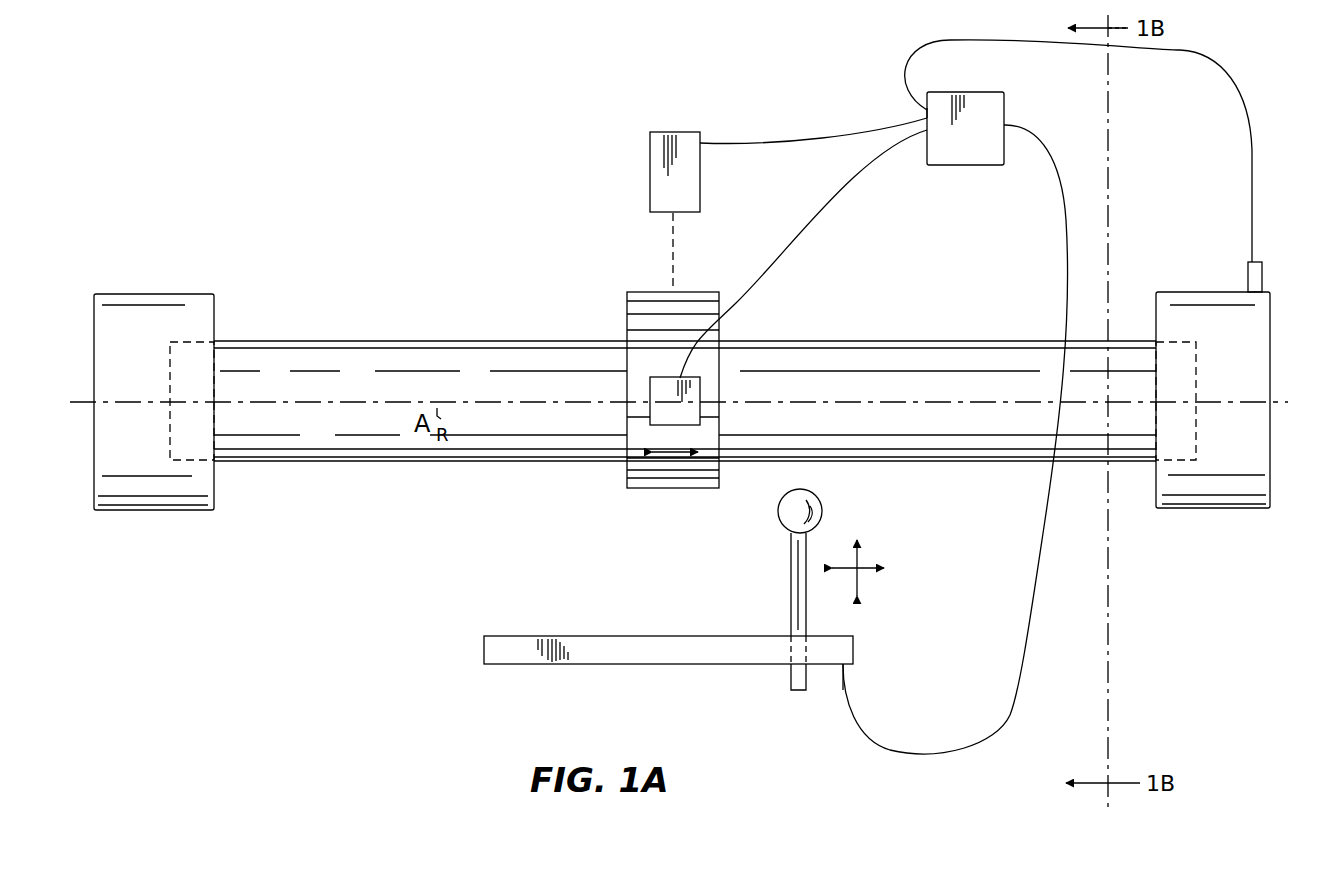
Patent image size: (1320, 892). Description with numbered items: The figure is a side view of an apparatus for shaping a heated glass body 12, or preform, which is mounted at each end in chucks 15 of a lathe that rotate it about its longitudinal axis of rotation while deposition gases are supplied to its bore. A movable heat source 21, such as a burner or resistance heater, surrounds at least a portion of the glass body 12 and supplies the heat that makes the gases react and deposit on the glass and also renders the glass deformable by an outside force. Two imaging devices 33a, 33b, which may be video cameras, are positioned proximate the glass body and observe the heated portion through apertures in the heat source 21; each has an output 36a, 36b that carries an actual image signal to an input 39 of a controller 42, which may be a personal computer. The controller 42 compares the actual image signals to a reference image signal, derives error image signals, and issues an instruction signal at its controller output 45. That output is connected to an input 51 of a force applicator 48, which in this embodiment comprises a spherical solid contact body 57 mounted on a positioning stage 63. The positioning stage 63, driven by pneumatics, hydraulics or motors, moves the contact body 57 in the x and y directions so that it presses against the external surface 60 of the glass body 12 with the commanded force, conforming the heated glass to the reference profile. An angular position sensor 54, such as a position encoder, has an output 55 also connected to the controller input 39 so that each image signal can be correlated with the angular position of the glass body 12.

The glass body 12 is at (425, 316).
The chucks 15 is at (188, 292).
The external surface 60 is at (517, 341).
The heat source 21 is at (640, 298).
The imaging device 33a is at (650, 156).
The output 36a is at (704, 140).
The imaging device 33b is at (660, 426).
The output 36b is at (670, 372).
The input 39 is at (920, 112).
The controller 42 is at (956, 166).
The controller output 45 is at (1012, 120).
The angular position sensor 54 is at (1263, 277).
The output 55 is at (1246, 256).
The solid contact body 57 is at (820, 500).
The force applicator 48 is at (772, 600).
The input 51 is at (850, 668).
The positioning stage 63 is at (750, 665).